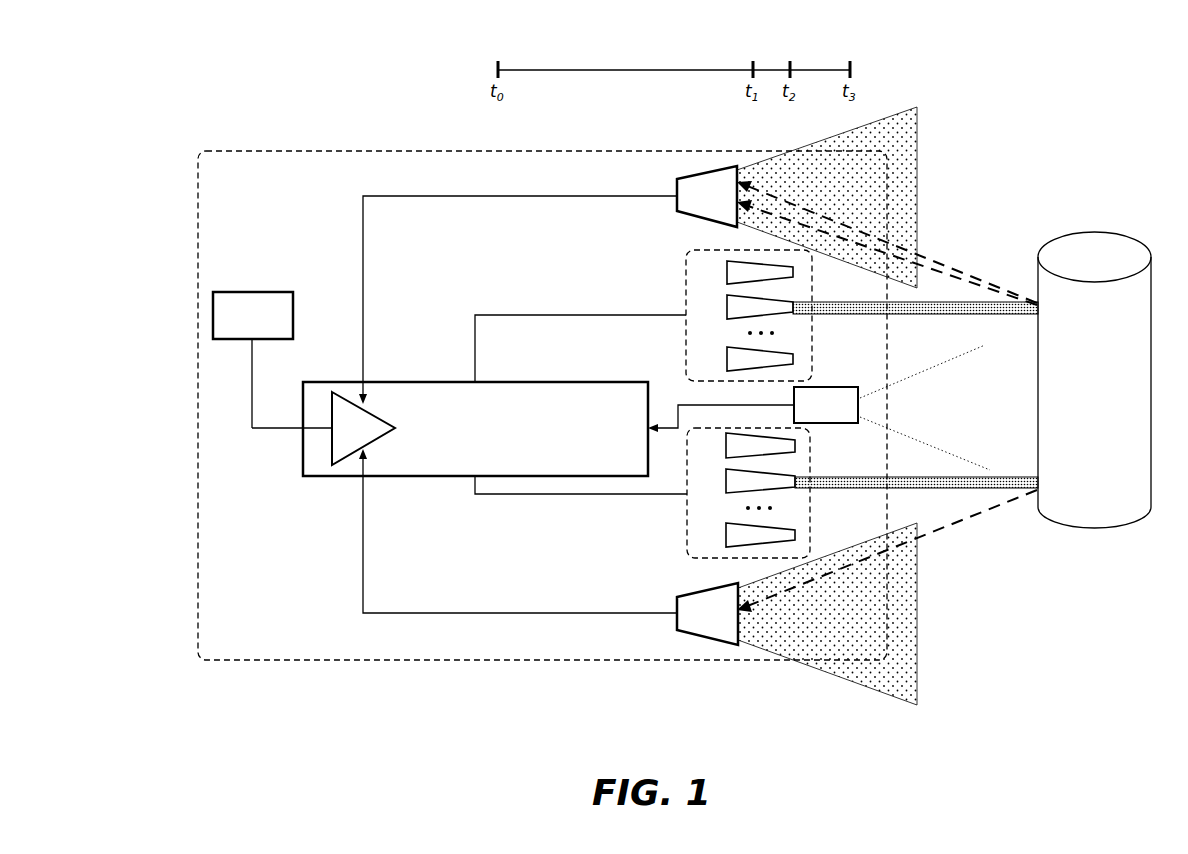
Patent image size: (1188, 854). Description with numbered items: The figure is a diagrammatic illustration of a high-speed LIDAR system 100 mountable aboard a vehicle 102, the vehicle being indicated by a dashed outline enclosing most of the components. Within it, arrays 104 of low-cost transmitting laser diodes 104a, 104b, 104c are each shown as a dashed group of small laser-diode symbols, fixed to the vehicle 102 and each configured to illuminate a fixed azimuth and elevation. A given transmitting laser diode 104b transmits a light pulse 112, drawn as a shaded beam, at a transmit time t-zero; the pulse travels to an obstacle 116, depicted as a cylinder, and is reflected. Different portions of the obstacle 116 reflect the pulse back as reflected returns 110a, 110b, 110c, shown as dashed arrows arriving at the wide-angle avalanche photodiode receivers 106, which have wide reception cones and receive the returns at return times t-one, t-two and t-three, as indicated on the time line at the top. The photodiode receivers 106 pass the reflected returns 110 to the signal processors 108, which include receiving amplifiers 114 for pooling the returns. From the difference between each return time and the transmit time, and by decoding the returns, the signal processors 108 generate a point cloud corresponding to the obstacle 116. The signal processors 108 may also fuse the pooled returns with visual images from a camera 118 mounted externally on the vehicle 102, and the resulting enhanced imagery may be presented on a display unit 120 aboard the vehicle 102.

The high-speed LIDAR system 100 is at (83, 85).
The vehicle 102 is at (316, 638).
The array of transmitting laser diodes 104 is at (754, 394).
The transmitting laser diode 104a is at (727, 272).
The transmitting laser diode 104b is at (727, 307).
The transmitting laser diode 104c is at (795, 360).
The wide-angle avalanche photodiode receiver 106 is at (722, 205).
The signal processor 108 is at (564, 439).
The reflected returns 110 is at (520, 197).
The reflected return 110a is at (885, 253).
The reflected return 110b is at (937, 262).
The reflected return 110c is at (955, 515).
The light pulse 112 is at (970, 317).
The receiving amplifier 114 is at (398, 429).
The obstacle 116 is at (1093, 528).
The camera 118 is at (841, 415).
The display unit 120 is at (270, 325).